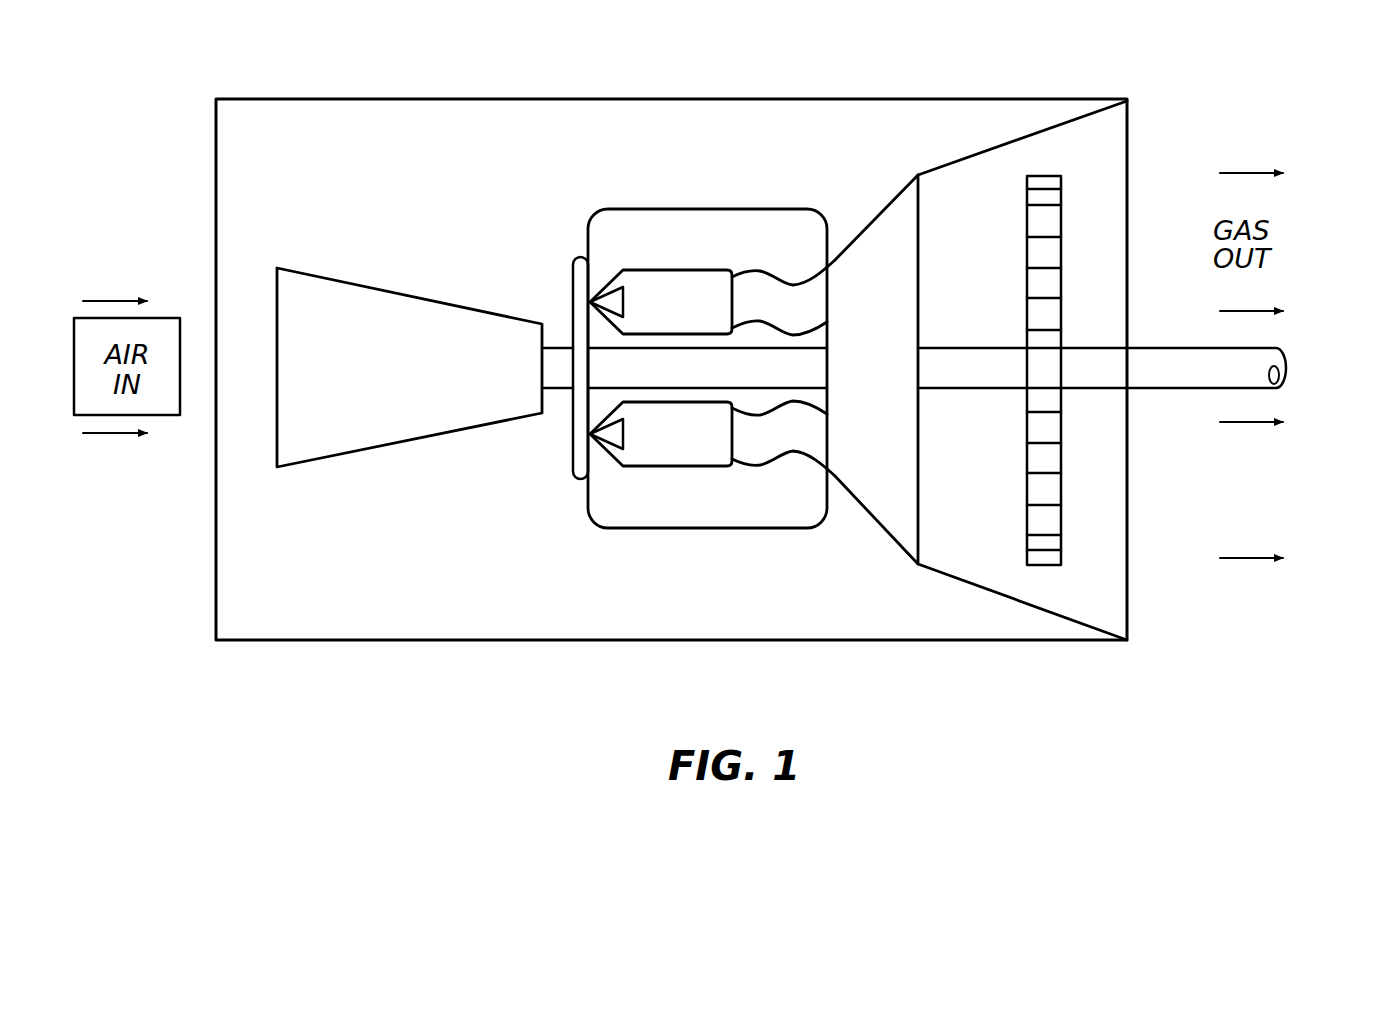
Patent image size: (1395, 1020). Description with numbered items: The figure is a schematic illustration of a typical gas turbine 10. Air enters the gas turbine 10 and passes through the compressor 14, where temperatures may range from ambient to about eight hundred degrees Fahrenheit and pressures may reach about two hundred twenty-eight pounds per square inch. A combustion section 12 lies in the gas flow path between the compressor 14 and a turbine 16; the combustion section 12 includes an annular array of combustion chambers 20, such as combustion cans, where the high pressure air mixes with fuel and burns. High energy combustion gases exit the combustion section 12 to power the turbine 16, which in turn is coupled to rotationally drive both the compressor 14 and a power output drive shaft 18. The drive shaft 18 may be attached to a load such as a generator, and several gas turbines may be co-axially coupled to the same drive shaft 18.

The gas turbine 10 is at (316, 94).
The combustion section 12 is at (787, 209).
The compressor 14 is at (413, 389).
The turbine 16 is at (888, 389).
The power output drive shaft 18 is at (1284, 353).
The combustion chambers 20 is at (640, 270).